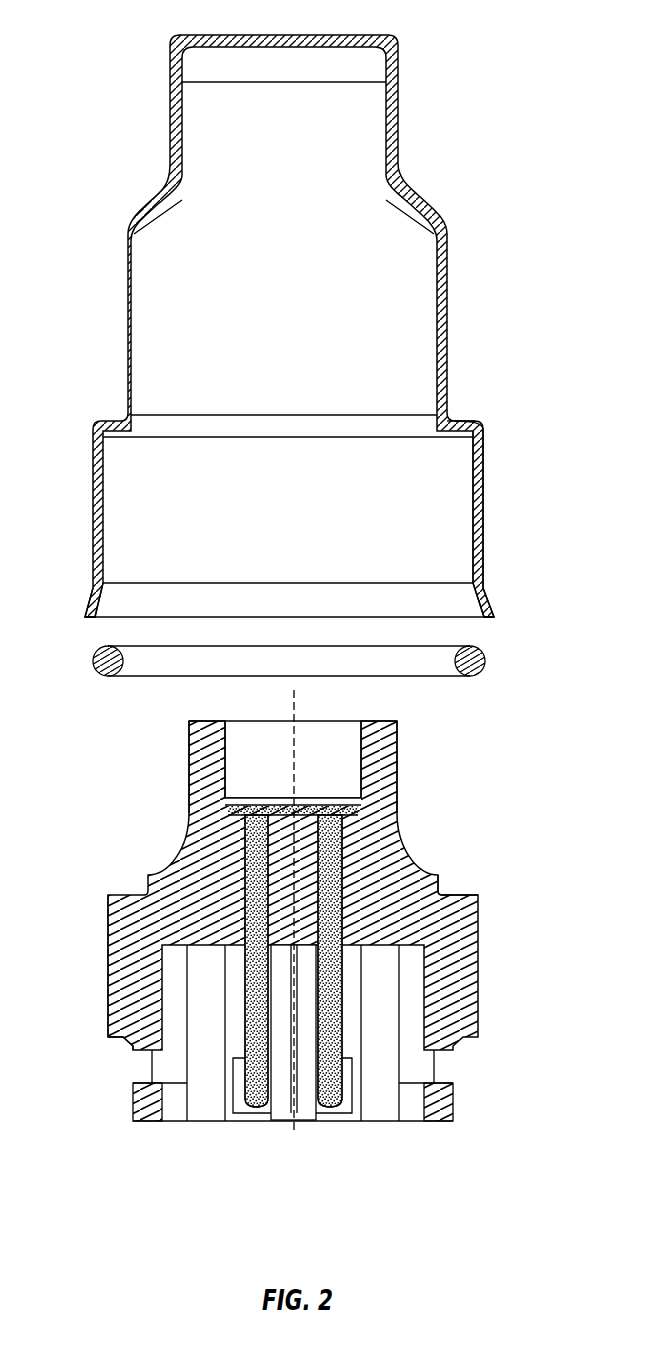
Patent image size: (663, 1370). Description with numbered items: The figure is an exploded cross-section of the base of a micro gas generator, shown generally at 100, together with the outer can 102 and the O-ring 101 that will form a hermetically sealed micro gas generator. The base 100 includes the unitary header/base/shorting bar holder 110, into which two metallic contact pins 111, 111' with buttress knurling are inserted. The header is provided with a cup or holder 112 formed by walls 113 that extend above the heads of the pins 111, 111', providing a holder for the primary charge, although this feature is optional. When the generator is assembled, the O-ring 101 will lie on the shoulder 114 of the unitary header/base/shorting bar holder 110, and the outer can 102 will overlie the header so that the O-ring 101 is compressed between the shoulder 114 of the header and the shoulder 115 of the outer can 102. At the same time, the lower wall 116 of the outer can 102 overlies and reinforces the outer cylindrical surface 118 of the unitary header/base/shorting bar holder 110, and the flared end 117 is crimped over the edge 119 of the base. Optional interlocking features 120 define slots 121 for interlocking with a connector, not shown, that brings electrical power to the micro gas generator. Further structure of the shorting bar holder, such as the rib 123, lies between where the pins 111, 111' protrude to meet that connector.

The base of the micro gas generator 100 is at (299, 953).
The O-ring 101 is at (485, 659).
The outer can 102 is at (328, 326).
The unitary header/base/shorting bar holder 110 is at (412, 848).
The metallic contact pin 111 is at (250, 998).
The metallic contact pin 111' is at (324, 998).
The cup or holder 112 is at (334, 726).
The walls 113 is at (388, 758).
The shoulder 114 is at (456, 892).
The shoulder 115 is at (465, 419).
The lower wall 116 is at (484, 527).
The flared end 117 is at (492, 594).
The outer cylindrical surface 118 is at (107, 965).
The edge 119 is at (118, 1040).
The interlocking features 120 is at (455, 1102).
The slots 121 is at (437, 1069).
The rib 123 is at (285, 1105).